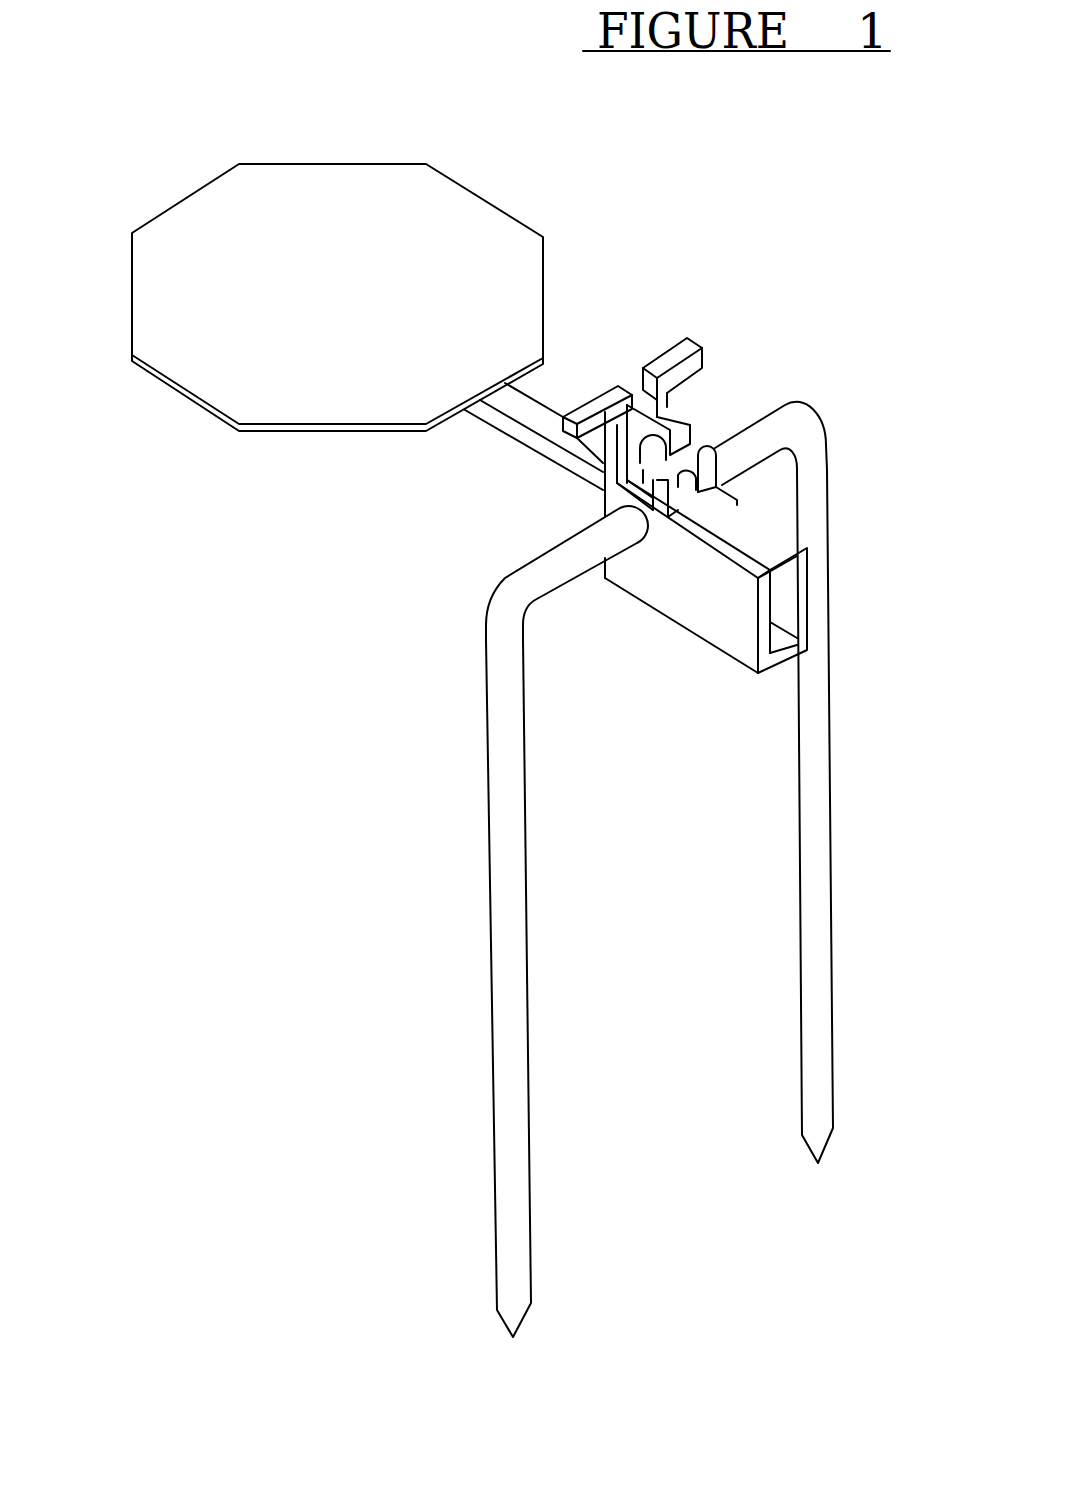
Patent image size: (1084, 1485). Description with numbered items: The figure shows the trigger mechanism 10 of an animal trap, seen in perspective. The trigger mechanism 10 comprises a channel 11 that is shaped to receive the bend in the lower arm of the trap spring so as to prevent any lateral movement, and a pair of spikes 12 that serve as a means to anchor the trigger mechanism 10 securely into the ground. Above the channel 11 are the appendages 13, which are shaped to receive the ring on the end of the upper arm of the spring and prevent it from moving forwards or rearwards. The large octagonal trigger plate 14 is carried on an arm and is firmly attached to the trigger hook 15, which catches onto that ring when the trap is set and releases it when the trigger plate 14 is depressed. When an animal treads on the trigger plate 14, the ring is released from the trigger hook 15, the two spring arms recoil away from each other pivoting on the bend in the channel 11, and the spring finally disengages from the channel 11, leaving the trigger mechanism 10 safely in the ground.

The trigger mechanism 10 is at (650, 545).
The channel 11 is at (785, 602).
The spikes 12 is at (815, 945).
The appendages 13 is at (712, 450).
The trigger plate 14 is at (310, 225).
The trigger hook 15 is at (658, 422).